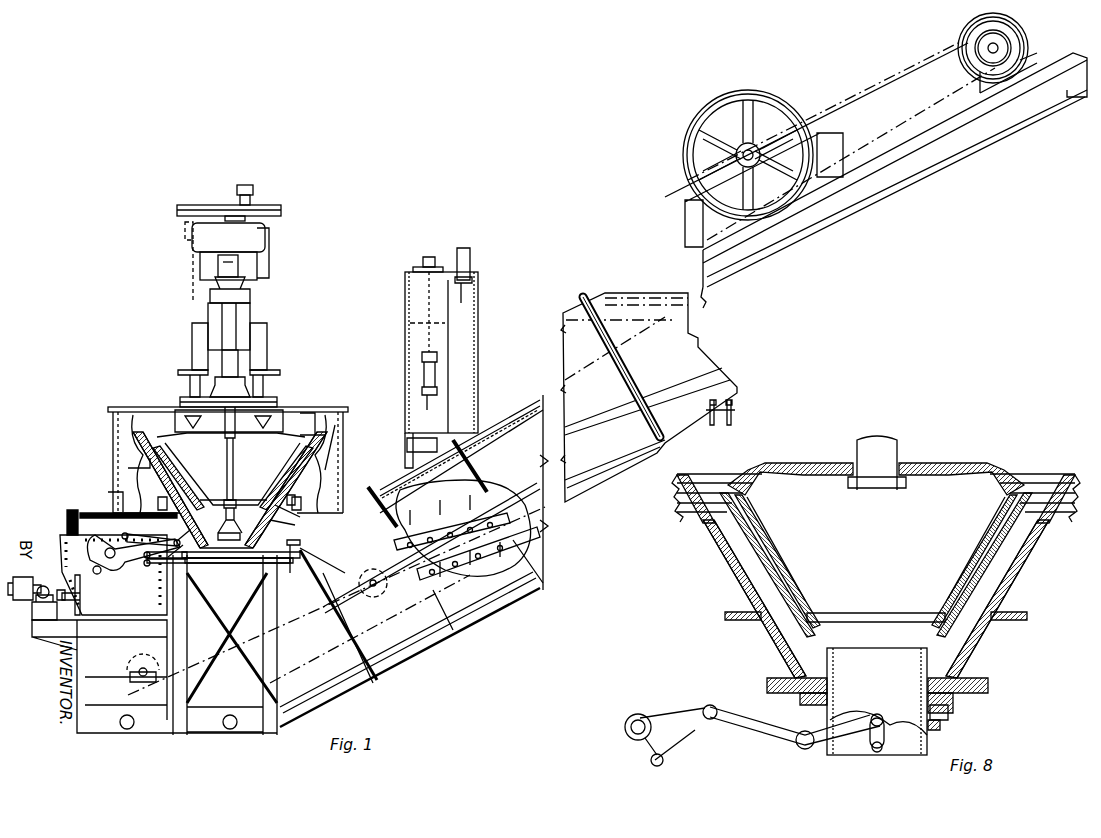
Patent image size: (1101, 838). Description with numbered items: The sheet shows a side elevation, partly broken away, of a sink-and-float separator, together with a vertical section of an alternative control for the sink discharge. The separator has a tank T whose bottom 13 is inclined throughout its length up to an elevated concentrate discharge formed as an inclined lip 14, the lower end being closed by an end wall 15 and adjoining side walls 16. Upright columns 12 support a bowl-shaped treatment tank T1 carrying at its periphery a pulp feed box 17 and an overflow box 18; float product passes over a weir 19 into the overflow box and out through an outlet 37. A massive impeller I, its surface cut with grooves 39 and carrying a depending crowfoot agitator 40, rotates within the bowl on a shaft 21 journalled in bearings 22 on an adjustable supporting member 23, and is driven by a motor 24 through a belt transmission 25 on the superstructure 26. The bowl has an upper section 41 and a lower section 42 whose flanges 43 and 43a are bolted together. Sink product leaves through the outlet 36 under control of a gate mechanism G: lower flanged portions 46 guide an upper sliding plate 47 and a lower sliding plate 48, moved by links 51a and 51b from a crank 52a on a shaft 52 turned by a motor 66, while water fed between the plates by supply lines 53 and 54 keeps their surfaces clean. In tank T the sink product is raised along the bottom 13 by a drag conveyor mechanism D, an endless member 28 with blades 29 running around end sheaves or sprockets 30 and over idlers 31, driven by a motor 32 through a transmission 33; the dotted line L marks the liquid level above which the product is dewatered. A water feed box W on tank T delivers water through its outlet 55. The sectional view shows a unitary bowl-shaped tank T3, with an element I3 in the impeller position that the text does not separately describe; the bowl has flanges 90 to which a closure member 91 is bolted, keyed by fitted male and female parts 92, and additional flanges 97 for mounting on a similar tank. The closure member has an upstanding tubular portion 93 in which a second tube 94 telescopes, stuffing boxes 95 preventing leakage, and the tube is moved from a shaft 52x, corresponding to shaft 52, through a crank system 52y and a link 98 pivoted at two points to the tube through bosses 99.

In FIG. 1, the belt transmission 25 is at (281, 211).
In FIG. 1, the motor 24 is at (262, 258).
In FIG. 1, the bearings 22 is at (236, 317).
In FIG. 1, the superstructure 26 is at (188, 387).
In FIG. 1, the adjustable supporting member 23 is at (273, 400).
In FIG. 1, the treatment tank T1 is at (135, 452).
In FIG. 1, the pulp feed box 17 is at (283, 420).
In FIG. 1, the weir 19 is at (330, 438).
In FIG. 1, the overflow box 18 is at (335, 472).
In FIG. 1, the impeller I is at (230, 490).
In FIG. 1, the shaft 21 is at (226, 440).
In FIG. 8, the shaft 21 is at (900, 458).
In FIG. 1, the grooves 39 is at (160, 486).
In FIG. 1, the outlet 37 is at (117, 497).
In FIG. 1, the upper section 41 is at (305, 482).
In FIG. 1, the flange 43 is at (300, 508).
In FIG. 1, the flange 43a is at (300, 527).
In FIG. 1, the lower section 42 is at (198, 532).
In FIG. 1, the crowfoot agitator 40 is at (240, 532).
In FIG. 1, the supply line 53 is at (300, 541).
In FIG. 1, the lower sliding plate 48 is at (248, 563).
In FIG. 1, the sink product discharge outlet 36 is at (220, 560).
In FIG. 1, the supply line 54 is at (291, 562).
In FIG. 1, the idlers 31 is at (368, 570).
In FIG. 1, the gate mechanism G is at (372, 582).
In FIG. 1, the shaft 52 is at (106, 560).
In FIG. 1, the link 51a is at (138, 535).
In FIG. 1, the upper sliding plate 47 is at (160, 556).
In FIG. 1, the lower flanged portions 46 is at (170, 563).
In FIG. 1, the link 51b is at (130, 568).
In FIG. 1, the motor 66 is at (27, 575).
In FIG. 1, the crank 52a is at (68, 588).
In FIG. 1, the side walls 16 is at (225, 645).
In FIG. 1, the end wall 15 is at (170, 642).
In FIG. 1, the end sheaves or sprockets 30 is at (140, 688).
In FIG. 1, the columns 12 is at (280, 687).
In FIG. 1, the inclined bottom 13 is at (403, 640).
In FIG. 1, the tank T is at (502, 414).
In FIG. 1, the outlet 55 is at (422, 456).
In FIG. 1, the drag conveyor mechanism D is at (488, 497).
In FIG. 1, the endless member 28 is at (508, 520).
In FIG. 1, the blades 29 is at (512, 556).
In FIG. 1, the water feed box W is at (412, 268).
In FIG. 1, the liquid level L is at (685, 321).
In FIG. 1, the concentrate discharge lip 14 is at (795, 240).
In FIG. 1, the motor 32 is at (965, 60).
In FIG. 1, the transmission 33 is at (910, 135).
In FIG. 8, the tank T3 is at (1035, 562).
In FIG. 8, the inner hopper I3 is at (785, 565).
In FIG. 8, the additional flanges 97 is at (1003, 622).
In FIG. 8, the second tube 94 is at (877, 701).
In FIG. 8, the flanges 90 is at (990, 681).
In FIG. 8, the male and female parts 92 is at (800, 693).
In FIG. 8, the closure member 91 is at (968, 695).
In FIG. 8, the upstanding tubular portion 93 is at (948, 712).
In FIG. 8, the stuffing boxes 95 is at (938, 730).
In FIG. 8, the link 98 is at (885, 736).
In FIG. 8, the bosses 99 is at (870, 753).
In FIG. 8, the crank system 52y is at (748, 725).
In FIG. 8, the shaft 52x is at (645, 710).